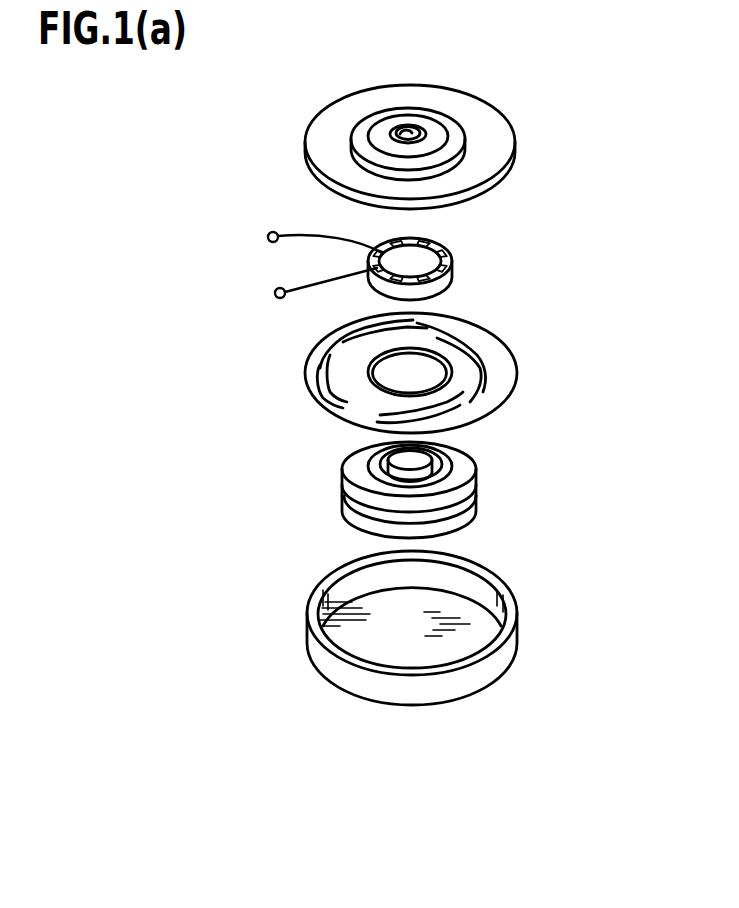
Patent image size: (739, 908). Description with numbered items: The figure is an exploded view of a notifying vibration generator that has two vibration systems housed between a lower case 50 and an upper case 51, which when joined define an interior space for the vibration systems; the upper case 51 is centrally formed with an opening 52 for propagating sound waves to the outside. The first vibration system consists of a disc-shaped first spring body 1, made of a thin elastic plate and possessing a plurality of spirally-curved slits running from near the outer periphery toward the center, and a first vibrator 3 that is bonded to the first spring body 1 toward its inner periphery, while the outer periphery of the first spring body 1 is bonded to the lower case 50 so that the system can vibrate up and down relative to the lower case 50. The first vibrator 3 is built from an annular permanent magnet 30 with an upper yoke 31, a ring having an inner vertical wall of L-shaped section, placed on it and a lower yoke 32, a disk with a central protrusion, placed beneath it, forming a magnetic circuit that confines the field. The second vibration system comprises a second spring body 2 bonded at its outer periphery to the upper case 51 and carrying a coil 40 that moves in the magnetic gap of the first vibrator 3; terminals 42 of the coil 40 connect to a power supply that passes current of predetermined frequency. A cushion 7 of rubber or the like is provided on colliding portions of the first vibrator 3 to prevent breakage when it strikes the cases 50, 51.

The first spring body 1 is at (470, 333).
The second spring body 2 is at (455, 253).
The first vibrator 3 is at (503, 493).
The cushion 7 is at (353, 377).
The permanent magnet 30 is at (474, 498).
The upper yoke 31 is at (463, 465).
The lower yoke 32 is at (481, 529).
The coil 40 is at (425, 296).
The terminals 42 is at (268, 238).
The lower case 50 is at (497, 660).
The upper case 51 is at (492, 135).
The opening 52 is at (413, 128).